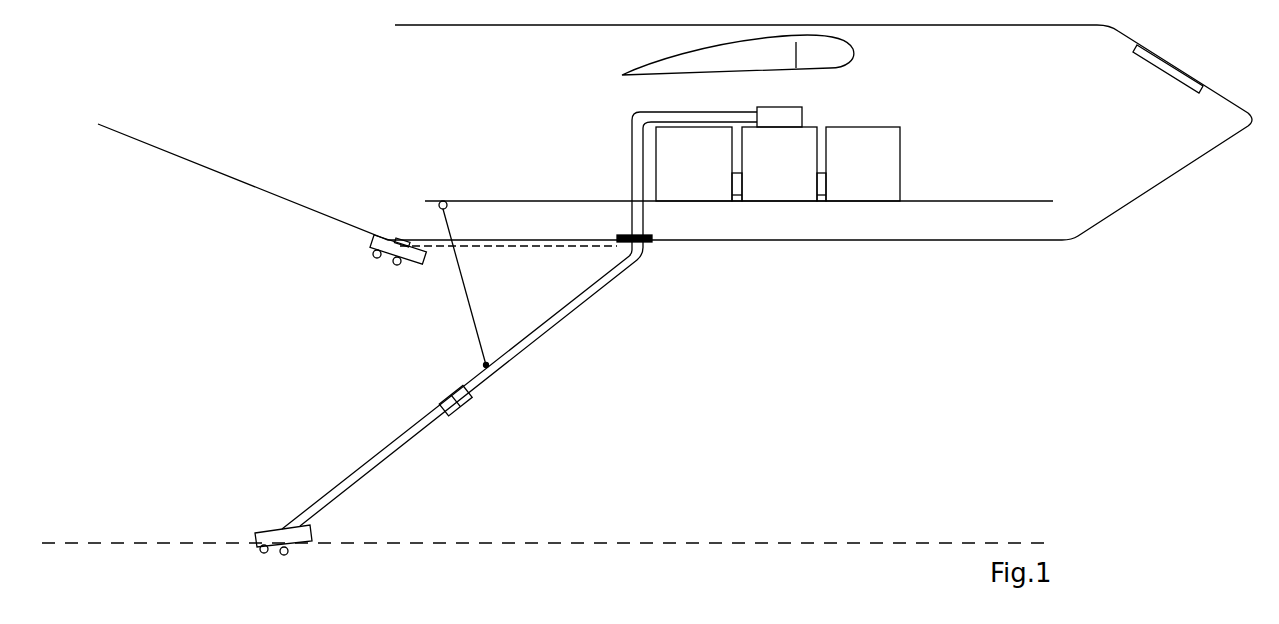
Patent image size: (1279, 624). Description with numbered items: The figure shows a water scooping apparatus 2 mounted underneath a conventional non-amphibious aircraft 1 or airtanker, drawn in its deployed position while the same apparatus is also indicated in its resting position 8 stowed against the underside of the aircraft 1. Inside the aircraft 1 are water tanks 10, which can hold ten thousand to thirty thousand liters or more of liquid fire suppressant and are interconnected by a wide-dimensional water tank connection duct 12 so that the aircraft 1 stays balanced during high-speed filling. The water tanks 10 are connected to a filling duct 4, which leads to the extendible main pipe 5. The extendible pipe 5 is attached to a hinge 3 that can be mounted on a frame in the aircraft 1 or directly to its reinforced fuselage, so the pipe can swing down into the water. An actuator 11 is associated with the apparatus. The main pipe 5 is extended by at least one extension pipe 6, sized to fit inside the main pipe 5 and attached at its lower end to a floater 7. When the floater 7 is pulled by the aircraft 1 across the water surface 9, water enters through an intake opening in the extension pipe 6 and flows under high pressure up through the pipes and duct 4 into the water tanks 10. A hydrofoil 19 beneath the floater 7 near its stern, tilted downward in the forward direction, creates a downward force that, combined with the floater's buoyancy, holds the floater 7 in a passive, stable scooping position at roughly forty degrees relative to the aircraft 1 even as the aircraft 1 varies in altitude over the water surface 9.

The aircraft 1 is at (1180, 176).
The water scooping apparatus 2 is at (512, 385).
The hinge 3 is at (653, 244).
The filling pipe or duct 4 is at (630, 162).
The extendible pipe 5 is at (462, 386).
The extension pipe 6 is at (381, 451).
The floater 7 is at (278, 530).
The water scooping apparatus in resting position 8 is at (402, 267).
The water surface 9 is at (717, 543).
The water tanks 10 is at (860, 192).
The actuator 11 is at (442, 201).
The water tank connection duct 12 is at (822, 200).
The hydrofoil 19 is at (262, 548).